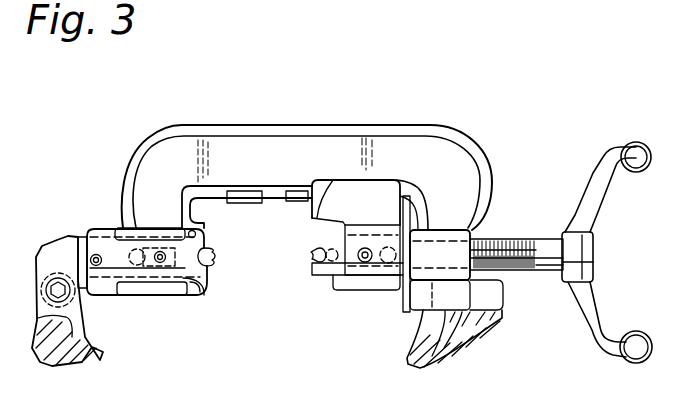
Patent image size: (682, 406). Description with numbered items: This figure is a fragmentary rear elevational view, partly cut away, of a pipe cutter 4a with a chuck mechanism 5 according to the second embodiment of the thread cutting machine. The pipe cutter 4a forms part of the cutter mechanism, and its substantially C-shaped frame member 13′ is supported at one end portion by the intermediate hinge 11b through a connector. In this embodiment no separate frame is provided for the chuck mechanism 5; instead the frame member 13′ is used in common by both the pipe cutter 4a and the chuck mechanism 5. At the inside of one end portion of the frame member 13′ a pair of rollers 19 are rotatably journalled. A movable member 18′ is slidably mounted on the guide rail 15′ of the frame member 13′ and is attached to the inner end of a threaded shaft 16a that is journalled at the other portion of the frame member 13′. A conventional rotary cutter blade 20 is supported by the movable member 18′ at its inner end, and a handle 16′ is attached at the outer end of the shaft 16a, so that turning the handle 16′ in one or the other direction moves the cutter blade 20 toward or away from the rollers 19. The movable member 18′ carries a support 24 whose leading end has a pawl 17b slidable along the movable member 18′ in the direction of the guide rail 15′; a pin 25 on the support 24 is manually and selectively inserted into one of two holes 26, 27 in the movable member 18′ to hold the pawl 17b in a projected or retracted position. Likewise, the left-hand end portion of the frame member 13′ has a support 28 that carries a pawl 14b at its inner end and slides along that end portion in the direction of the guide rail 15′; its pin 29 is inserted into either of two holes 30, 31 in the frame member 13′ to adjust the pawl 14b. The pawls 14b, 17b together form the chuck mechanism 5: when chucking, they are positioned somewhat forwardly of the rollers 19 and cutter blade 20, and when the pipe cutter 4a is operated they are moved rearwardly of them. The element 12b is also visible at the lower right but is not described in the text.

The pipe cutter 4a is at (370, 109).
The frame member 13′ is at (267, 143).
The guide rail 15′ is at (303, 192).
The support 28 is at (185, 256).
The hole 31 is at (124, 228).
The hole 30 is at (158, 243).
The pin 29 is at (162, 266).
The pawl 14b is at (217, 295).
The rollers 19 is at (207, 247).
The intermediate hinge 11b is at (52, 260).
The rotary cutter blade 20 is at (321, 210).
The support 24 is at (348, 266).
The hole 26 is at (366, 248).
The pin 25 is at (387, 263).
The movable member 18′ is at (368, 285).
The pawl 17b is at (312, 258).
The chuck mechanism 5 is at (217, 262).
The hole 27 is at (410, 229).
The clamp foot 12b is at (497, 297).
The threaded shaft 16a is at (518, 239).
The handle 16′ is at (582, 204).